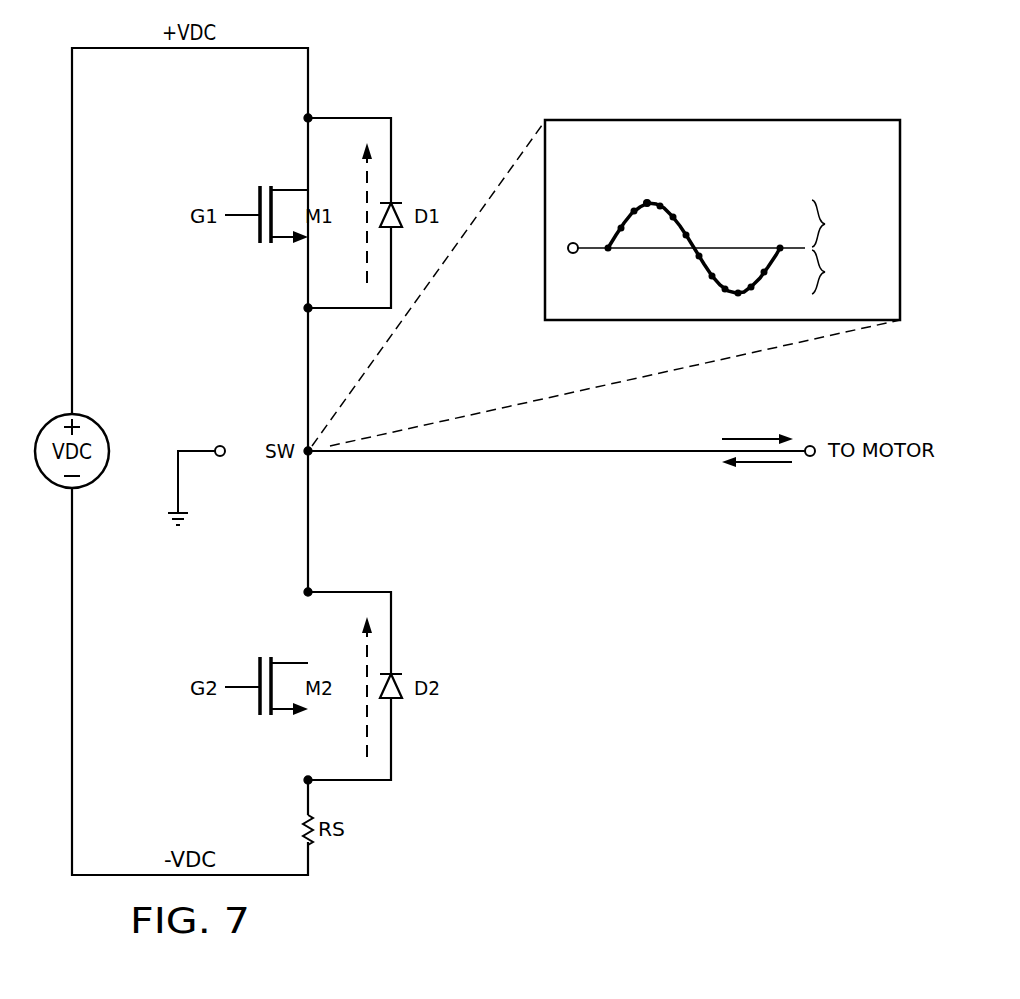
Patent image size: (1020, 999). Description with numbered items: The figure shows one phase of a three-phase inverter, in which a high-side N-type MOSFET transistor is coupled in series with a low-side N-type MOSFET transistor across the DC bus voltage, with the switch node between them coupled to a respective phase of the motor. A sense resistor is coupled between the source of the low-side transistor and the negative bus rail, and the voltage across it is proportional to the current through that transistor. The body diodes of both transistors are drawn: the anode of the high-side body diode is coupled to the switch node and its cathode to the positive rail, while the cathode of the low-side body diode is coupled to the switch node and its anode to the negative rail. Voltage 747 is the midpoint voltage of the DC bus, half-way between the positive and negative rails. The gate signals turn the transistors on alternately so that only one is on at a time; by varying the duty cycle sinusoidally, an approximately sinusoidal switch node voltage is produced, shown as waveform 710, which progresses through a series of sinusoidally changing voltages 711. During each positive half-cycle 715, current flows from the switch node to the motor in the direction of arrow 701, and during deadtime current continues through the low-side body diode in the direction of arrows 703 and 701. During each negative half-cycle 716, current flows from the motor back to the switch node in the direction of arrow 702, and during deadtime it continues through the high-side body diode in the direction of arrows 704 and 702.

The arrow 701 is at (757, 437).
The arrow 702 is at (759, 465).
The arrow 703 is at (368, 745).
The arrow 704 is at (368, 167).
The waveform 710 is at (744, 190).
The sinusoidally changing voltages 711 is at (663, 202).
The positive half-cycle 715 is at (845, 223).
The negative half-cycle 716 is at (845, 272).
The voltage 747 is at (166, 523).